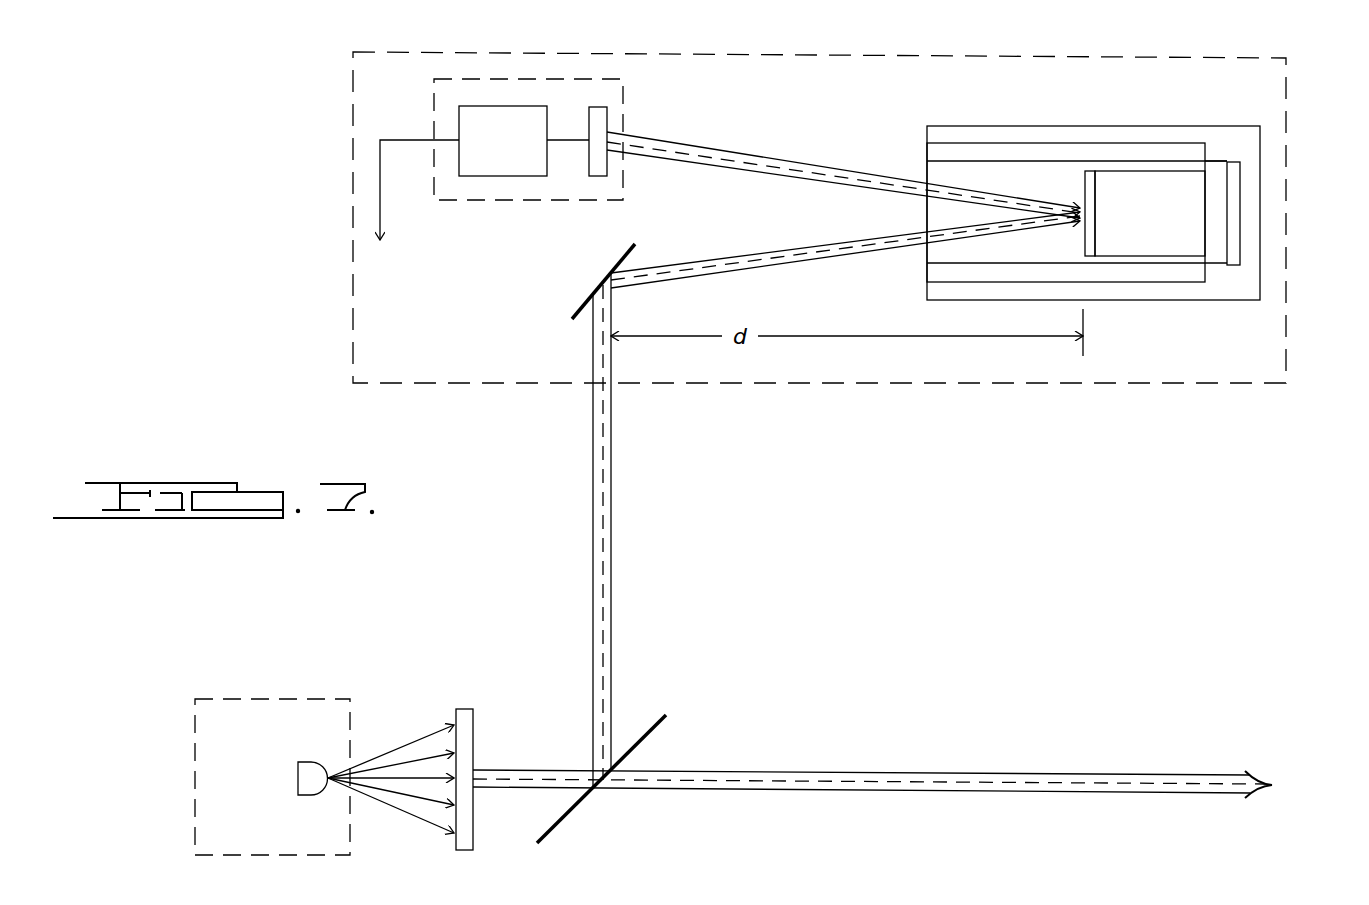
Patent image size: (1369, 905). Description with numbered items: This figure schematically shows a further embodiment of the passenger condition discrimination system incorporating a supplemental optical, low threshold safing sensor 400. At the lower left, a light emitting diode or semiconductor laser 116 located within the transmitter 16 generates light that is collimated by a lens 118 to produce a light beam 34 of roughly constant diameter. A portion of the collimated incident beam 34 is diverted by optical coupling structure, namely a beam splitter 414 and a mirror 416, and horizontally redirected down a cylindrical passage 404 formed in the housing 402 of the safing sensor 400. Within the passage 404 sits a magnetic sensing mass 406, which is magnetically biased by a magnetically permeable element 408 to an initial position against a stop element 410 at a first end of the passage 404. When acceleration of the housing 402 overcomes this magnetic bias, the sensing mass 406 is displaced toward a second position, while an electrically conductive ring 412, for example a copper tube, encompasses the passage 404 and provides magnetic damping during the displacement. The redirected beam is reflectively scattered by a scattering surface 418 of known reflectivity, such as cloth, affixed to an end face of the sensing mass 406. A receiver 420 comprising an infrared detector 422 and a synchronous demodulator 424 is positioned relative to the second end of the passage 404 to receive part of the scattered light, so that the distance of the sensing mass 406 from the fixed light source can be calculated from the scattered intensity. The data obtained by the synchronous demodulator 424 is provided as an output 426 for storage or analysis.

The optical low threshold safing sensor 400 is at (846, 50).
The housing 402 is at (966, 125).
The cylindrical passage 404 is at (1030, 164).
The magnetic sensing mass 406 is at (1147, 258).
The magnetically permeable element 408 is at (1232, 268).
The stop element 410 is at (1217, 155).
The electrically conductive ring 412 is at (1188, 143).
The beam splitter 414 is at (648, 732).
The mirror 416 is at (567, 300).
The scattering surface 418 is at (1090, 163).
The receiver 420 is at (540, 74).
The infrared detector 422 is at (598, 105).
The synchronous demodulator 424 is at (458, 117).
The output 426 is at (380, 172).
The transmitter 16 is at (212, 697).
The light emitting diode or semiconductor laser 116 is at (296, 783).
The lens 118 is at (467, 708).
The collimated incident light beam 34 is at (945, 793).